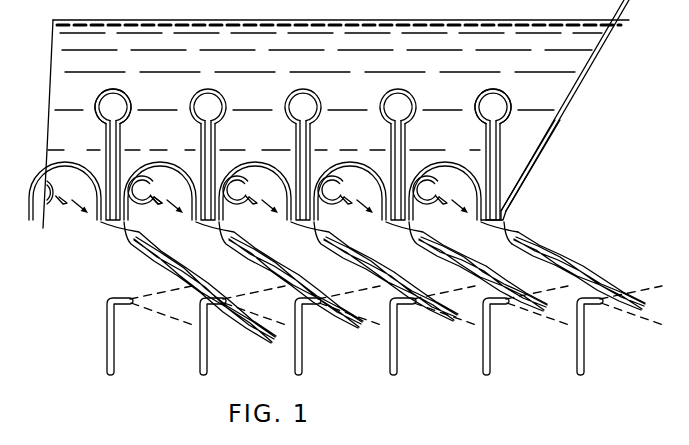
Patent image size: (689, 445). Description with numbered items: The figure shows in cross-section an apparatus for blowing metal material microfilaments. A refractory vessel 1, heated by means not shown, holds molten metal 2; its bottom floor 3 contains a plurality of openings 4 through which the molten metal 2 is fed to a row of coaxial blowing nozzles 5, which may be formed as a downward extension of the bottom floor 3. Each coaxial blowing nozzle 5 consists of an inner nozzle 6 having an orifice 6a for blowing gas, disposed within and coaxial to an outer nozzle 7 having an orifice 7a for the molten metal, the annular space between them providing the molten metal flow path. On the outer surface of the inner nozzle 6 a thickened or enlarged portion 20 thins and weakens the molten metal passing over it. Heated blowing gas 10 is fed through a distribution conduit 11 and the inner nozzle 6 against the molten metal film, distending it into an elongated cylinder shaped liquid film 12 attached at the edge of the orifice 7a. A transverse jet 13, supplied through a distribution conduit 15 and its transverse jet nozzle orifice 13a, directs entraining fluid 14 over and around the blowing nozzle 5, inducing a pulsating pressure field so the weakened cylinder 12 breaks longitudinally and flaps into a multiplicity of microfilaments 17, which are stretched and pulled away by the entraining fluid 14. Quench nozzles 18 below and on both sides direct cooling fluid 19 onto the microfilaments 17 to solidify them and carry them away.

The vessel 1 is at (572, 116).
The molten metal 2 is at (353, 19).
The bottom floor 3 is at (256, 161).
The openings 4 is at (130, 157).
The coaxial blowing nozzle 5 is at (511, 209).
The inner nozzle 6 is at (500, 137).
The orifice of inner nozzle 6a is at (399, 212).
The outer nozzle 7 is at (505, 218).
The orifice of outer nozzle 7a is at (404, 228).
The blowing gas 10 is at (103, 105).
The distribution conduit 11 is at (126, 94).
The elongated cylinder shaped liquid film 12 is at (510, 230).
The transverse jet 13 is at (160, 196).
The transverse jet nozzle orifice 13a is at (165, 206).
The entraining fluid 14 is at (266, 212).
The distribution conduit 15 is at (228, 203).
The microfilaments 17 is at (383, 268).
The quench nozzles 18 is at (305, 300).
The cooling fluid 19 is at (350, 292).
The thickened or enlarged portion 20 is at (93, 152).